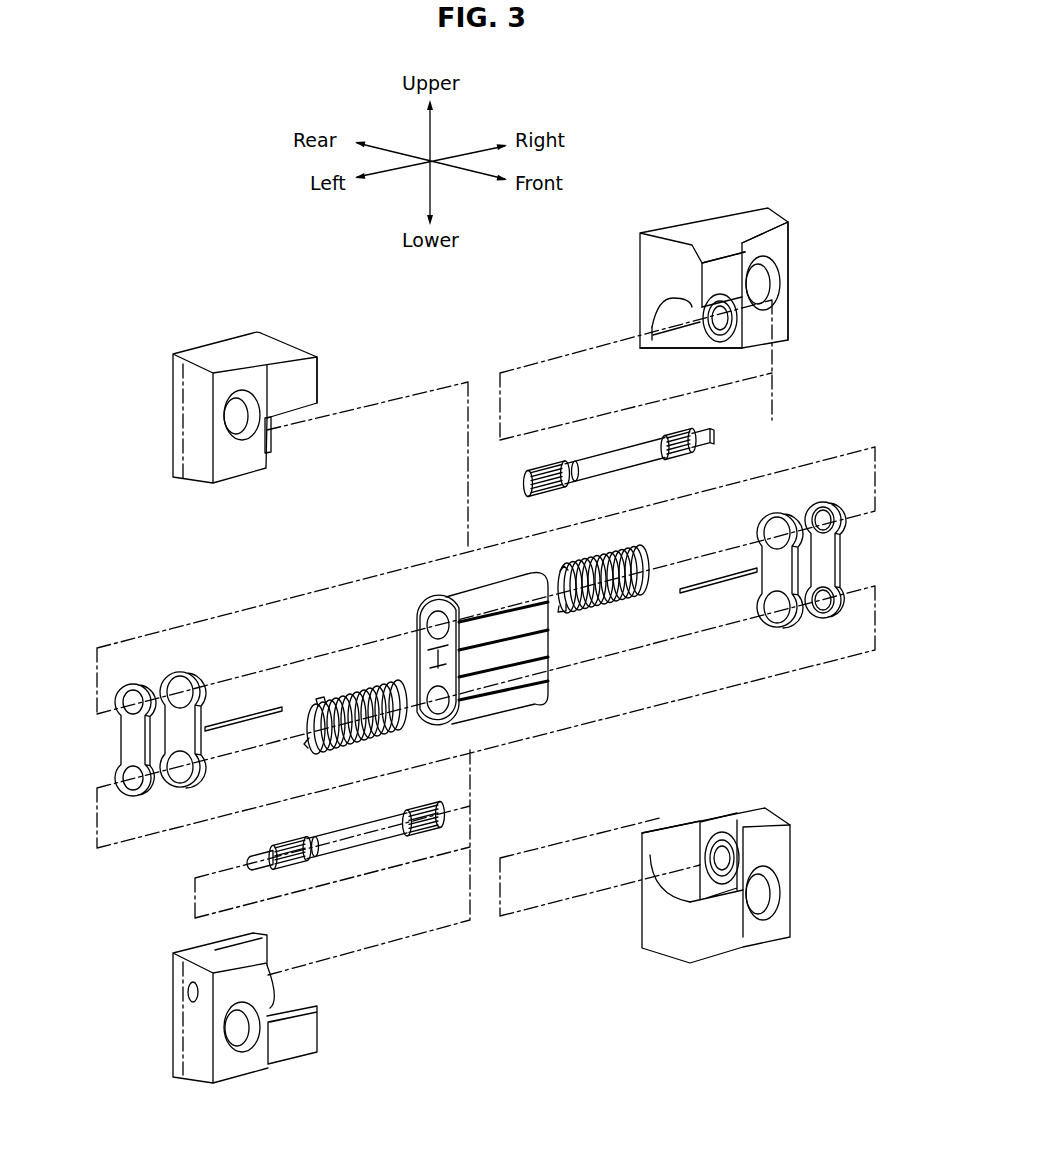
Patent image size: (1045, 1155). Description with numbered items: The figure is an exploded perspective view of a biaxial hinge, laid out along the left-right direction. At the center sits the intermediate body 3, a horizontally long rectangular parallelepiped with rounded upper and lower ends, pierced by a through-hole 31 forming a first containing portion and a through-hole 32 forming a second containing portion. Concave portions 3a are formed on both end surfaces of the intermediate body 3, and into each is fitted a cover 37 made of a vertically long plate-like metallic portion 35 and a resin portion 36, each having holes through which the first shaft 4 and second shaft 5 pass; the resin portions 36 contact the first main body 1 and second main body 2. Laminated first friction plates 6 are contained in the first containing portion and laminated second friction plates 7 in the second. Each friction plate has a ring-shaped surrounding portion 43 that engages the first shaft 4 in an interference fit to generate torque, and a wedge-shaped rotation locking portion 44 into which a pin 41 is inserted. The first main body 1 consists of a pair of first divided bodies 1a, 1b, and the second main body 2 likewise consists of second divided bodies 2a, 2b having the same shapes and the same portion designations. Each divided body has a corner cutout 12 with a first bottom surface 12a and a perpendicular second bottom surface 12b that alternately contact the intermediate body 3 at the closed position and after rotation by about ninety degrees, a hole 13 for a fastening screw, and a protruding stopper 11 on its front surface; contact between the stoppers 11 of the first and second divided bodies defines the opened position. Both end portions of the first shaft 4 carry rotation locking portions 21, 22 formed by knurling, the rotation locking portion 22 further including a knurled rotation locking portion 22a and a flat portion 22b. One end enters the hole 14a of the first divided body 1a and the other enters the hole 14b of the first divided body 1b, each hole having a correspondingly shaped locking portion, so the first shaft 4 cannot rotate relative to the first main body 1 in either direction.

The first main body 1 is at (551, 289).
The first divided body 1a is at (280, 343).
The first divided body 1b is at (653, 280).
The second main body 2 is at (603, 1029).
The second divided body 2a is at (660, 945).
The second divided body 2b is at (266, 1080).
The intermediate body 3 is at (458, 581).
The concave portion 3a is at (418, 660).
The through-hole 31 is at (418, 611).
The through-hole 32 is at (452, 712).
The first shaft 4 is at (595, 440).
The second shaft 5 is at (357, 862).
The first friction plates 6 is at (613, 550).
The second friction plates 7 is at (355, 742).
The stopper 11 is at (305, 388).
The cutout 12 is at (480, 630).
The first bottom surface 12a is at (673, 333).
The second bottom surface 12b is at (703, 312).
The hole 13 is at (242, 430).
The hole 14a is at (270, 421).
The hole 14b is at (724, 318).
The rotation locking portion 21 is at (548, 489).
The rotation locking portion 22 is at (753, 495).
The rotation locking portion 22a is at (678, 452).
The flat portion 22b is at (707, 445).
The metallic portion 35 is at (186, 668).
The resin portion 36 is at (130, 676).
The cover 37 is at (187, 593).
The pin 41 is at (240, 719).
The surrounding portion 43 is at (308, 740).
The rotation locking portion 44 is at (321, 700).